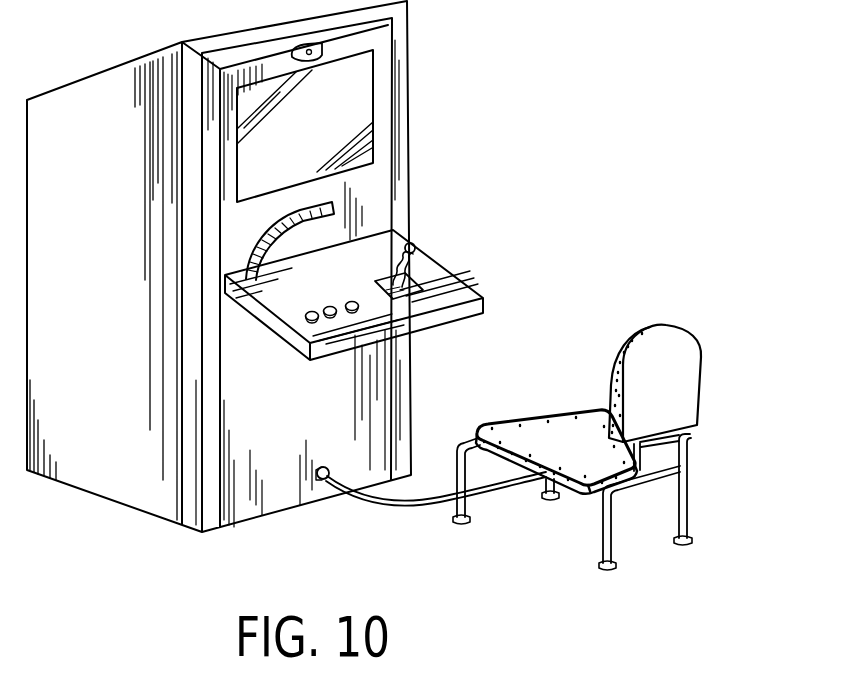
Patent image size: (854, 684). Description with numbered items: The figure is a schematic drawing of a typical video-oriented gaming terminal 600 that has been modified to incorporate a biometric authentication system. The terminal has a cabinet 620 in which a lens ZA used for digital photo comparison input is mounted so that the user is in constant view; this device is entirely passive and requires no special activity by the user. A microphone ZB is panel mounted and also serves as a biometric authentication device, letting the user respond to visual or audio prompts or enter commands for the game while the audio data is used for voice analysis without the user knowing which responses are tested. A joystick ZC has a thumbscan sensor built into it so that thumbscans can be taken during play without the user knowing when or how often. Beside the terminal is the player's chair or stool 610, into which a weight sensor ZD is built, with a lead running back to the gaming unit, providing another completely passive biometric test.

The gaming terminal 600 is at (530, 182).
The chair or stool 610 is at (672, 398).
The cabinet 620 is at (132, 480).
The lens ZA is at (320, 52).
The microphone ZB is at (337, 196).
The joystick ZC is at (420, 259).
The weight sensor ZD is at (553, 428).